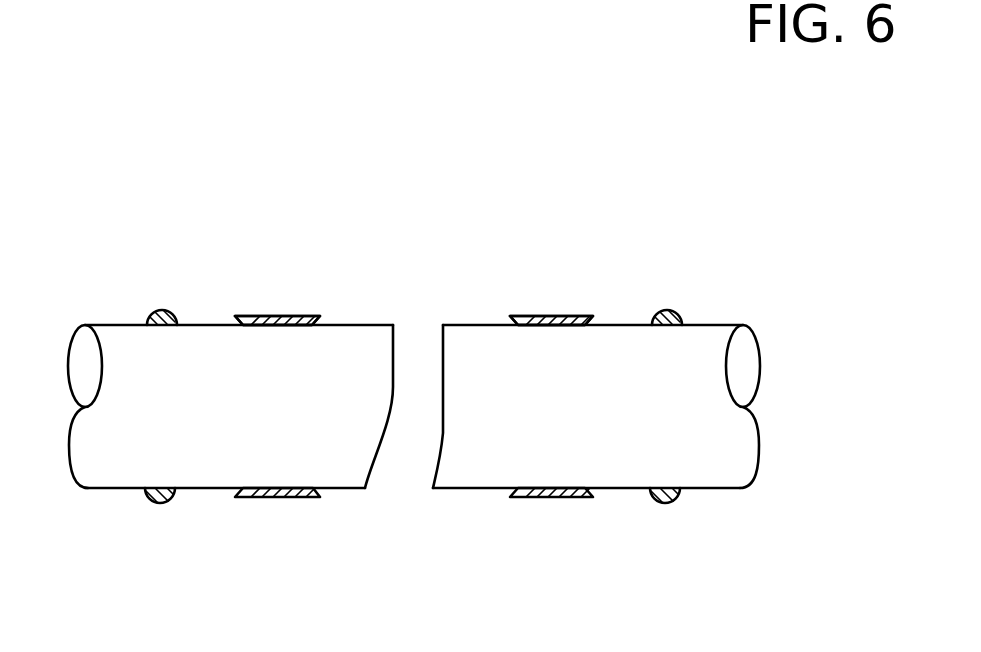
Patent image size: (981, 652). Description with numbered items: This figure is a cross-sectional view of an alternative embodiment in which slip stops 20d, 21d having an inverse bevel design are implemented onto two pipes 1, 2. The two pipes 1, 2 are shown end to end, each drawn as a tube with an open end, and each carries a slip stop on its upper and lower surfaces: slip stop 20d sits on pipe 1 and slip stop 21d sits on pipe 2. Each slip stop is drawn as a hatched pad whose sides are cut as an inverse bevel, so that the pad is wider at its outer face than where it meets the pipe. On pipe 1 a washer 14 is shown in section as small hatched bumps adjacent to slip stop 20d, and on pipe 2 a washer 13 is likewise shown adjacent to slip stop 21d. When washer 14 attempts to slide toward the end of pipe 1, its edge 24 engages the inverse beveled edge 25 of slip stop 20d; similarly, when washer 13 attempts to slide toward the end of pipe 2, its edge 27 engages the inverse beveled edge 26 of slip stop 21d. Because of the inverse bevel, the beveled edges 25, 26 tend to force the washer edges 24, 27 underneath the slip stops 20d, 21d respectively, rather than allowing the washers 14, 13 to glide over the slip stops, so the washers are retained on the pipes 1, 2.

The pipe 1 is at (97, 488).
The pipe 2 is at (728, 488).
The washer 13 is at (662, 505).
The washer 14 is at (158, 505).
The slip stop 20d is at (308, 315).
The slip stop 21d is at (513, 317).
The edge 24 is at (162, 309).
The inverse beveled edge 25 is at (232, 324).
The inverse beveled edge 26 is at (590, 323).
The edge 27 is at (668, 310).